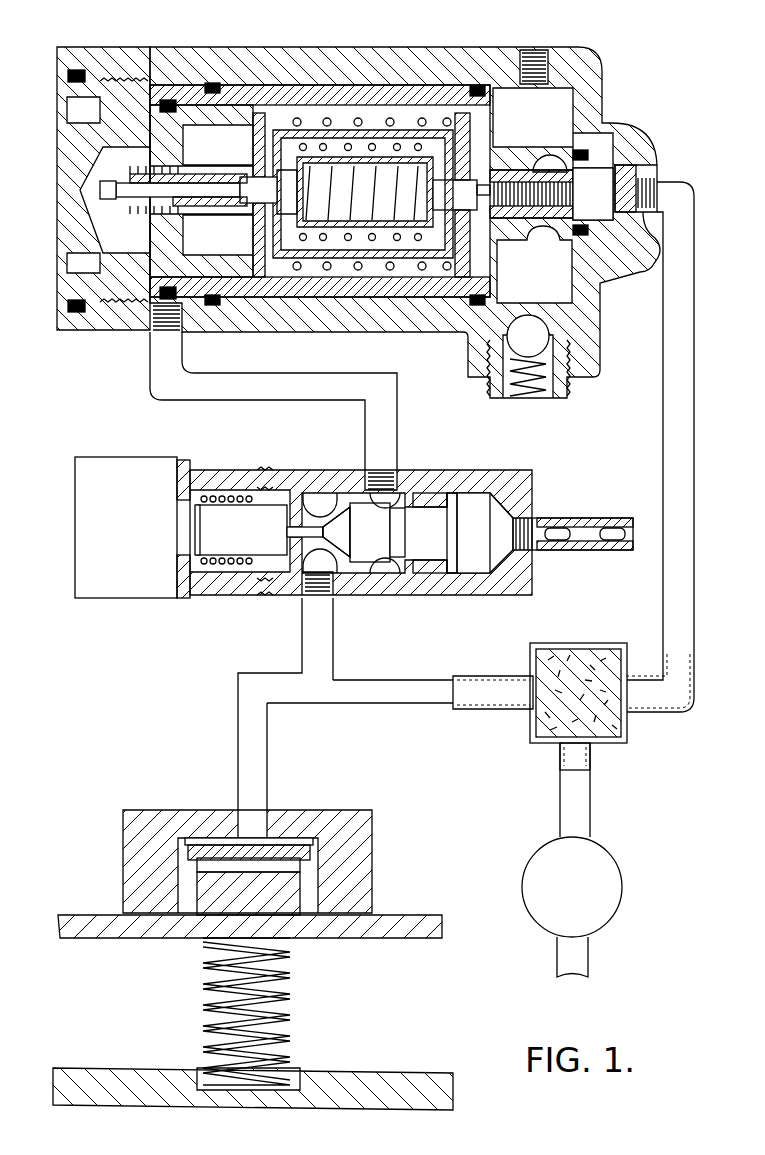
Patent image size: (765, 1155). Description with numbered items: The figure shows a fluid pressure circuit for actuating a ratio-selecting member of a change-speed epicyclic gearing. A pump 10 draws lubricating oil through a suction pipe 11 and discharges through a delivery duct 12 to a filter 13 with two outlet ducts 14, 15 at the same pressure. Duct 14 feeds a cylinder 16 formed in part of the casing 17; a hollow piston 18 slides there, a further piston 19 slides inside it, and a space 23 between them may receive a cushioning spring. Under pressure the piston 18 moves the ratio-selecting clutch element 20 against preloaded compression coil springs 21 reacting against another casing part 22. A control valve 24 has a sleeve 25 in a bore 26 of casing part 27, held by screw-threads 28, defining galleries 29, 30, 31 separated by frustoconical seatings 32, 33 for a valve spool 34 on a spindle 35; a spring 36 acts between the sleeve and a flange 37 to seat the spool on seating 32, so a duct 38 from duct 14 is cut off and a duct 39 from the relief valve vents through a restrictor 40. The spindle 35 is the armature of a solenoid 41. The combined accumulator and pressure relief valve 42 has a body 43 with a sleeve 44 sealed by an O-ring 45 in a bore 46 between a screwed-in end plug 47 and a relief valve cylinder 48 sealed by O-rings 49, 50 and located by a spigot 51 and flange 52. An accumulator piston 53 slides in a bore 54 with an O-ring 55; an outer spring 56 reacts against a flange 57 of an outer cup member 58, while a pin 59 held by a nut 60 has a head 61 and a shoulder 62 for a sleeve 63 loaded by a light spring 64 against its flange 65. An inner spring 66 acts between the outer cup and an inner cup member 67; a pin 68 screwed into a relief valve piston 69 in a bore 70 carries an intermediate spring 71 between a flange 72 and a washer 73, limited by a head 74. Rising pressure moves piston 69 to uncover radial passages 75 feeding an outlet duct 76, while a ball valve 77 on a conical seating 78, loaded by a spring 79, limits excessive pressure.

The pump 10 is at (559, 903).
The suction pipe 11 is at (560, 972).
The delivery duct 12 is at (562, 828).
The filter 13 is at (555, 717).
The outlet duct 14 is at (390, 700).
The outlet duct 15 is at (663, 621).
The cylinder 16 is at (303, 837).
The casing 17 is at (372, 830).
The hollow piston 18 is at (372, 868).
The further piston 19 is at (210, 897).
The ratio-selecting clutch element 20 is at (382, 936).
The compression coil springs 21 is at (210, 1023).
The casing part 22 is at (342, 1080).
The space 23 is at (227, 860).
The control valve 24 is at (259, 598).
The sleeve 25 is at (430, 573).
The bore 26 is at (470, 577).
The casing part 27 is at (507, 583).
The screw-threads 28 is at (275, 593).
The gallery 29 is at (317, 565).
The gallery 30 is at (380, 565).
The gallery 31 is at (460, 545).
The frustoconical seating 32 is at (350, 507).
The frustoconical seating 33 is at (420, 493).
The valve spool 34 is at (366, 546).
The spindle 35 is at (232, 545).
The compression coil spring 36 is at (237, 562).
The flange 37 is at (195, 518).
The duct 38 is at (305, 649).
The duct 39 is at (259, 404).
The restrictor 40 is at (583, 533).
The solenoid 41 is at (104, 545).
The combined accumulator and pressure relief valve 42 is at (506, 45).
The body 43 is at (343, 70).
The sleeve 44 is at (387, 118).
The O-ring 45 is at (214, 87).
The bore 46 is at (170, 103).
The end plug 47 is at (120, 95).
The relief valve cylinder 48 is at (578, 155).
The O-ring 49 is at (580, 152).
The O-ring 50 is at (473, 93).
The spigot 51 is at (597, 273).
The flange 52 is at (568, 137).
The accumulator piston 53 is at (233, 113).
The bore 54 is at (265, 112).
The O-ring 55 is at (168, 105).
The outer compression spring 56 is at (414, 122).
The flange 57 is at (453, 123).
The outer cup member 58 is at (444, 122).
The pin 59 is at (245, 200).
The nut 60 is at (106, 205).
The head 61 is at (252, 282).
The shoulder 62 is at (245, 177).
The sleeve 63 is at (217, 203).
The light compression spring 64 is at (158, 213).
The flange 65 is at (198, 170).
The inner compression spring 66 is at (335, 232).
The inner cup member 67 is at (410, 242).
The pin 68 is at (438, 204).
The relief valve piston 69 is at (515, 212).
The bore 70 is at (581, 207).
The intermediate compression spring 71 is at (368, 238).
The flange 72 is at (298, 235).
The washer 73 is at (478, 157).
The head 74 is at (448, 245).
The radial passages 75 is at (546, 157).
The outlet duct 76 is at (549, 64).
The ball valve 77 is at (518, 347).
The conical seating 78 is at (552, 333).
The spring 79 is at (532, 396).